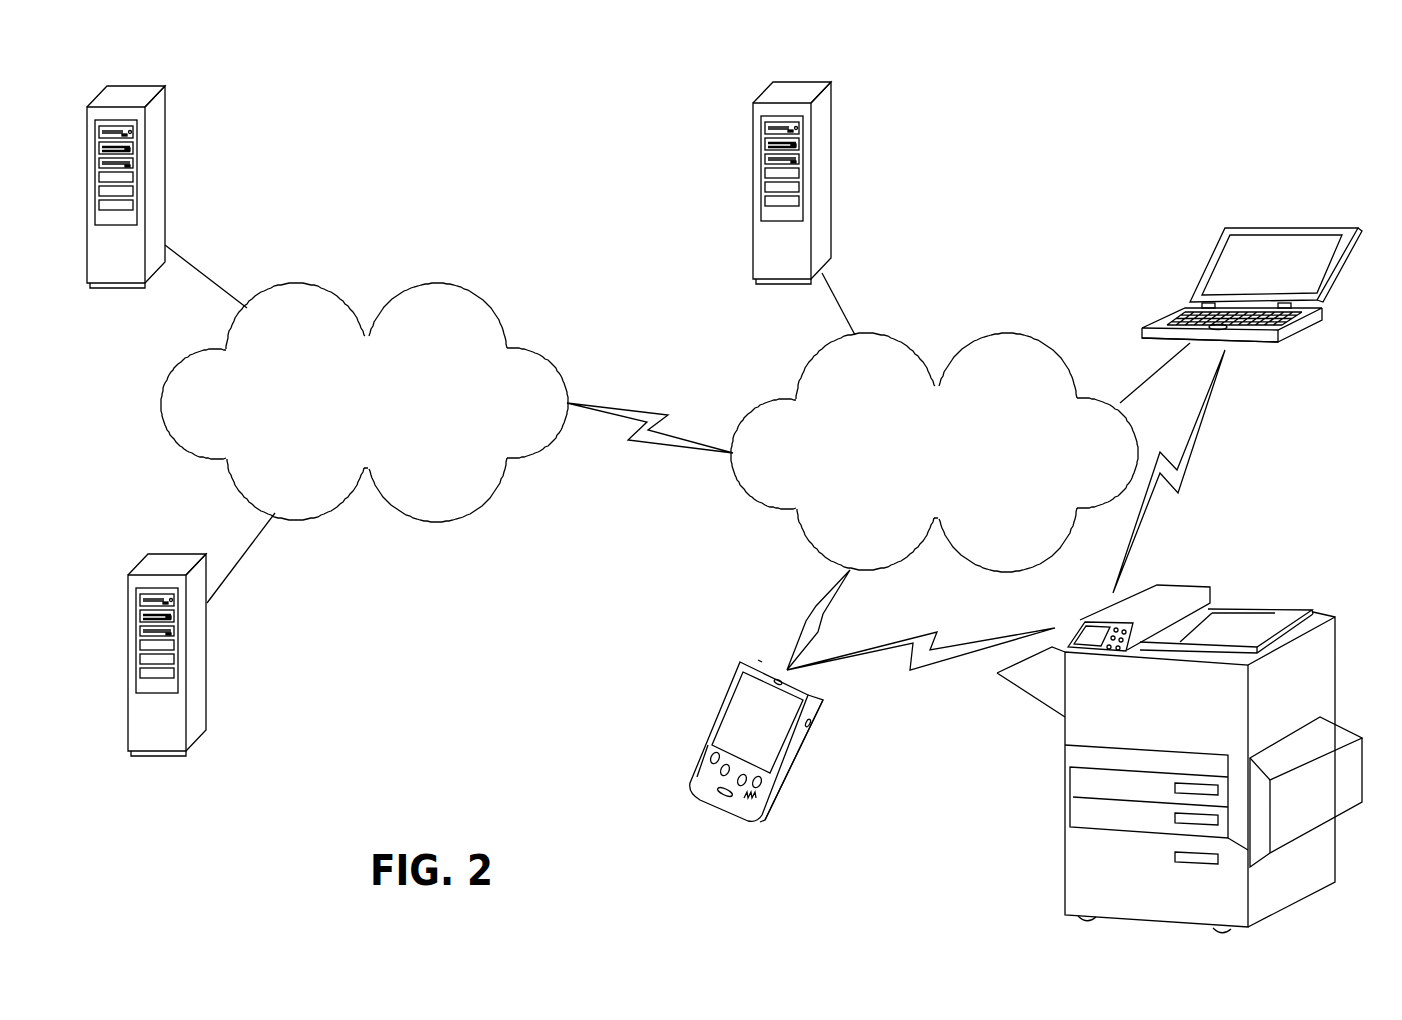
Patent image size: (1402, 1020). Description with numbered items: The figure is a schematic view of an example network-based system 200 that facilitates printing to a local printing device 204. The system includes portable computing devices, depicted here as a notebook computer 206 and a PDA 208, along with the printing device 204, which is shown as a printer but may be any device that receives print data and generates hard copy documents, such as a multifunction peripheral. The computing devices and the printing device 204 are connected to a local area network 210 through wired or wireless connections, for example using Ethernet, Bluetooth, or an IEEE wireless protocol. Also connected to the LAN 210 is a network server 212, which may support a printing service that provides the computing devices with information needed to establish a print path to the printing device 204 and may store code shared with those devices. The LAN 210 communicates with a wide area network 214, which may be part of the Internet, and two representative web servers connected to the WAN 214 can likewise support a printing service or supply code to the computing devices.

The network-based system 200 is at (1267, 121).
The local printing device 204 is at (1299, 584).
The notebook computer 206 is at (1293, 327).
The PDA 208 is at (775, 797).
The local area network (LAN) 210 is at (917, 477).
The network server 212 is at (742, 130).
The wide area network (WAN) 214 is at (347, 427).